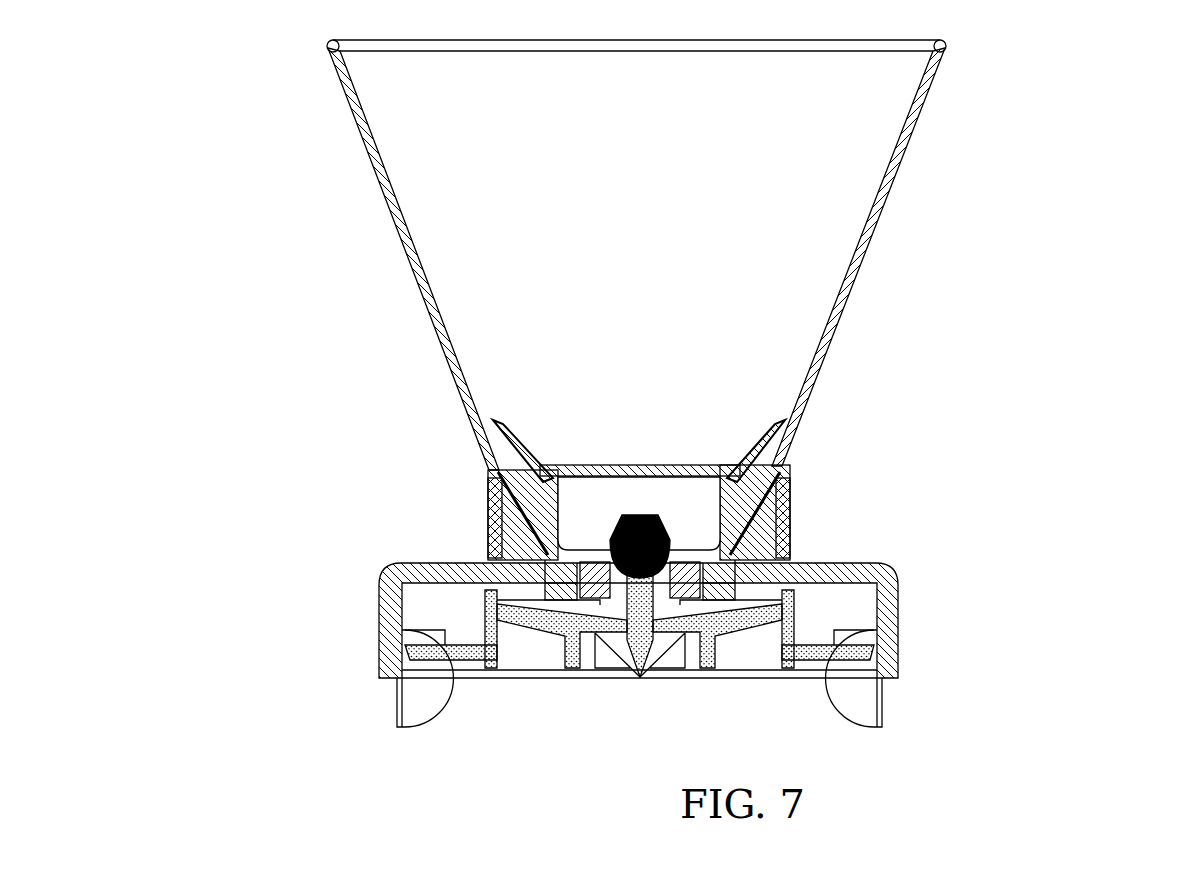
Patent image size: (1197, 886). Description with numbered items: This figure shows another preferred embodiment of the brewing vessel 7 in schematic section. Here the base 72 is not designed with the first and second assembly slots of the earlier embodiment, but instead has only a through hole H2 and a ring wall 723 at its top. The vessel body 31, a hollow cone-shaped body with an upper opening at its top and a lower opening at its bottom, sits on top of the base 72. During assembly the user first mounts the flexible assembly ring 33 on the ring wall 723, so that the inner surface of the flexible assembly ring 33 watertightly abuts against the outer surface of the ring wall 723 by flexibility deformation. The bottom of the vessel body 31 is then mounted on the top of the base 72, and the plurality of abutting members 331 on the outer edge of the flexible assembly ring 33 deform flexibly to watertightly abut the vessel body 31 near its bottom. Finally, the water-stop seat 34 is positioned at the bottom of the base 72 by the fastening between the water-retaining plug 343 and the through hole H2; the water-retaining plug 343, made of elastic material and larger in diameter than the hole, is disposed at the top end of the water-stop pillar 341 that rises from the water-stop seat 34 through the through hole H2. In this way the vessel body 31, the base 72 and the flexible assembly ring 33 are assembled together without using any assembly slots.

The brewing vessel 7 is at (1120, 88).
The vessel body 31 is at (900, 166).
The flexible assembly ring 33 is at (750, 462).
The abutting members 331 is at (490, 512).
The water-stop seat 34 is at (652, 668).
The water-stop pillar 341 is at (612, 640).
The water-retaining plug 343 is at (630, 515).
The base 72 is at (905, 600).
The ring wall 723 is at (772, 517).
The through hole H2 is at (678, 548).